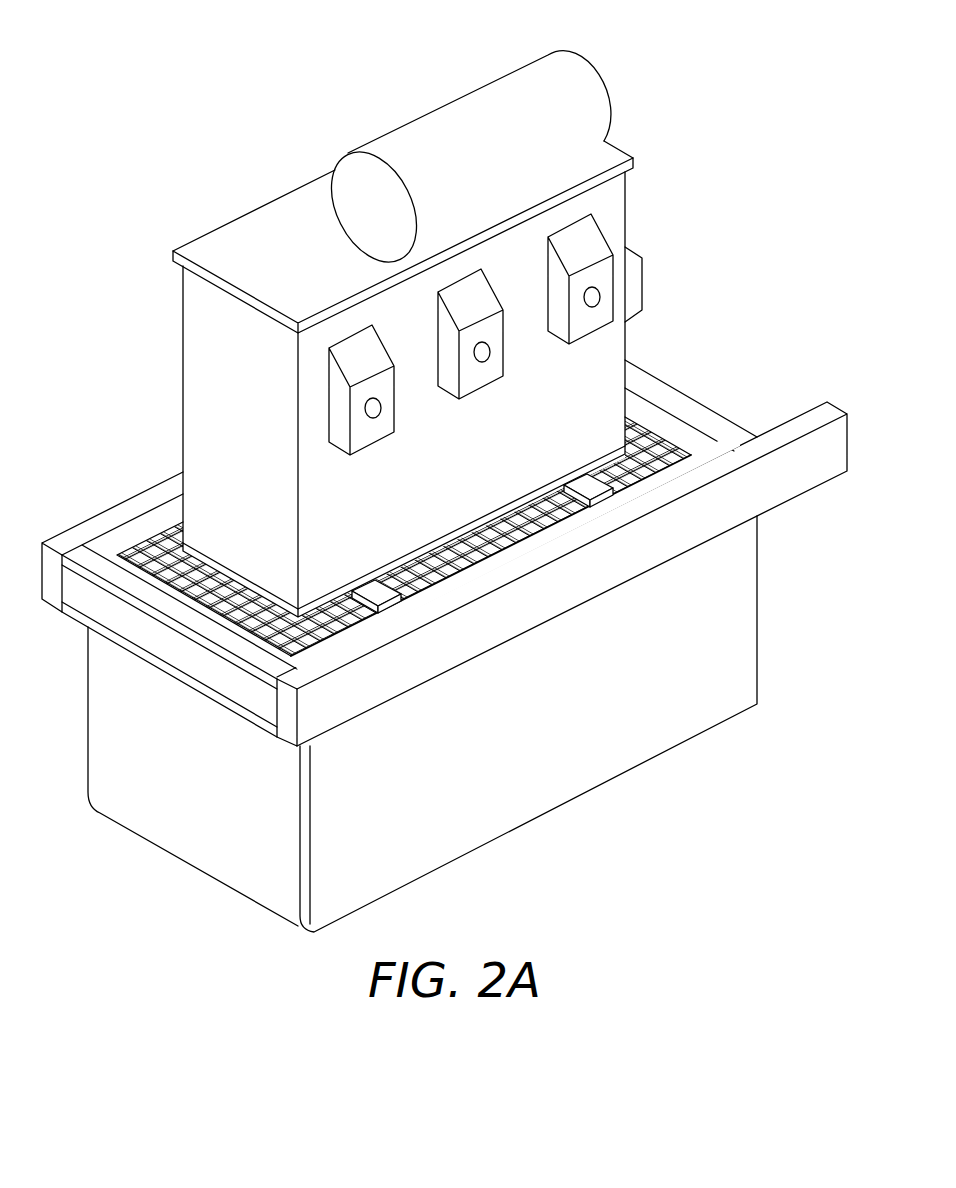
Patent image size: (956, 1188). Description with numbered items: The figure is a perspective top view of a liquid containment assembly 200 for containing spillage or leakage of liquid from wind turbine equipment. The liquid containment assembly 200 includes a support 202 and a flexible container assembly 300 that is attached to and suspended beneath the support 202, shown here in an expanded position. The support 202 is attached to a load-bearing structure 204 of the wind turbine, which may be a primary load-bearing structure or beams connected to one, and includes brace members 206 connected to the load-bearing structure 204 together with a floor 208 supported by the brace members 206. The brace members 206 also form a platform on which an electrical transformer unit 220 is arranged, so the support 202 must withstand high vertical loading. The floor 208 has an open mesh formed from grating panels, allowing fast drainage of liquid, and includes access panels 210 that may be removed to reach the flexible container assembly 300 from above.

The liquid containment assembly 200 is at (352, 92).
The support 202 is at (649, 363).
The load-bearing structure 204 is at (92, 523).
The brace members 206 is at (665, 445).
The floor 208 is at (503, 563).
The access panels 210 is at (597, 510).
The electrical transformer unit 220 is at (621, 188).
The flexible container assembly 300 is at (773, 540).